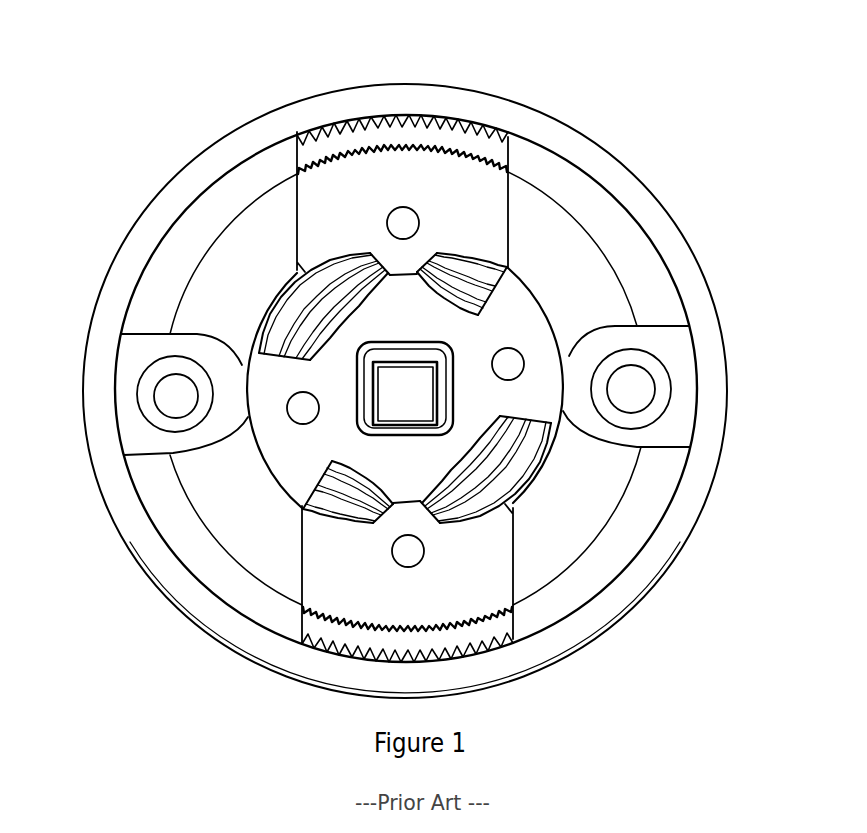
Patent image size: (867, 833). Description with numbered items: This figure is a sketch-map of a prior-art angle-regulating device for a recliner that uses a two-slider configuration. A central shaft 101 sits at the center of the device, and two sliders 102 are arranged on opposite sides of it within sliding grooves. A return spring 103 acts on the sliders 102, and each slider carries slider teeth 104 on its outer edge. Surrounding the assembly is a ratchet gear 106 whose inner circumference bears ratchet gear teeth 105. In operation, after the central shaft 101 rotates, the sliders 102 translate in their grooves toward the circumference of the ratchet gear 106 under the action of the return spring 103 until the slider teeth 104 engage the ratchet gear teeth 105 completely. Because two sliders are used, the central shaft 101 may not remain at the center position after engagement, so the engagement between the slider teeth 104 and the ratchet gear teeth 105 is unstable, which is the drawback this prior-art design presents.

The central shaft 101 is at (440, 380).
The sliders 102 is at (502, 346).
The return spring 103 is at (306, 294).
The slider teeth 104 is at (480, 157).
The ratchet gear teeth 105 is at (294, 128).
The ratchet gear 106 is at (378, 96).